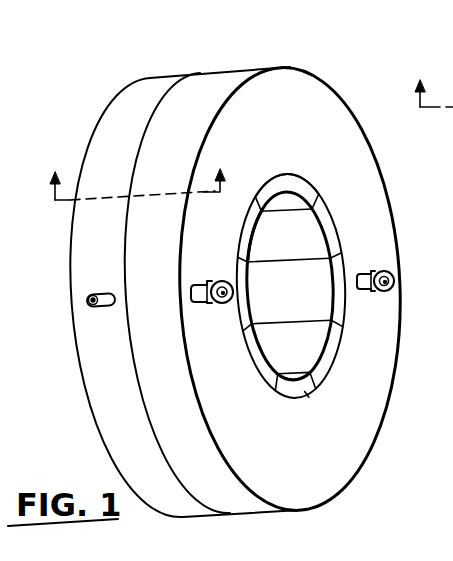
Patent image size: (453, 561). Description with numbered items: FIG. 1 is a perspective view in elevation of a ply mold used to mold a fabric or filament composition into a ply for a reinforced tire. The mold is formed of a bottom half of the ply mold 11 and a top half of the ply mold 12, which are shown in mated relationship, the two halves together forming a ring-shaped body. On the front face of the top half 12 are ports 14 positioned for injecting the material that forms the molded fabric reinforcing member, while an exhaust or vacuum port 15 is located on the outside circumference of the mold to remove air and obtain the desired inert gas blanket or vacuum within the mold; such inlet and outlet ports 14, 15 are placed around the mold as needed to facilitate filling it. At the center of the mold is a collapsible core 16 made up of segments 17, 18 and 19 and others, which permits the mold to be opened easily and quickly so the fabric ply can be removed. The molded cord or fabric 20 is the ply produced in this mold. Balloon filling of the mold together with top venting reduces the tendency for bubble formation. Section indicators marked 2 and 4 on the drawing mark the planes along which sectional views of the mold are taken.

The bottom half of ply mold 11 is at (148, 96).
The top half of ply mold 12 is at (284, 88).
The ports 14 is at (225, 303).
The exhaust or vacuum port 15 is at (100, 302).
The collapsible core 16 is at (335, 356).
The segment 17 is at (325, 228).
The segment 18 is at (300, 185).
The segment 19 is at (248, 222).
The molded cord or fabric 20 is at (452, 78).
The section line 2- 2 is at (140, 169).
The section line 4- 4 is at (431, 81).